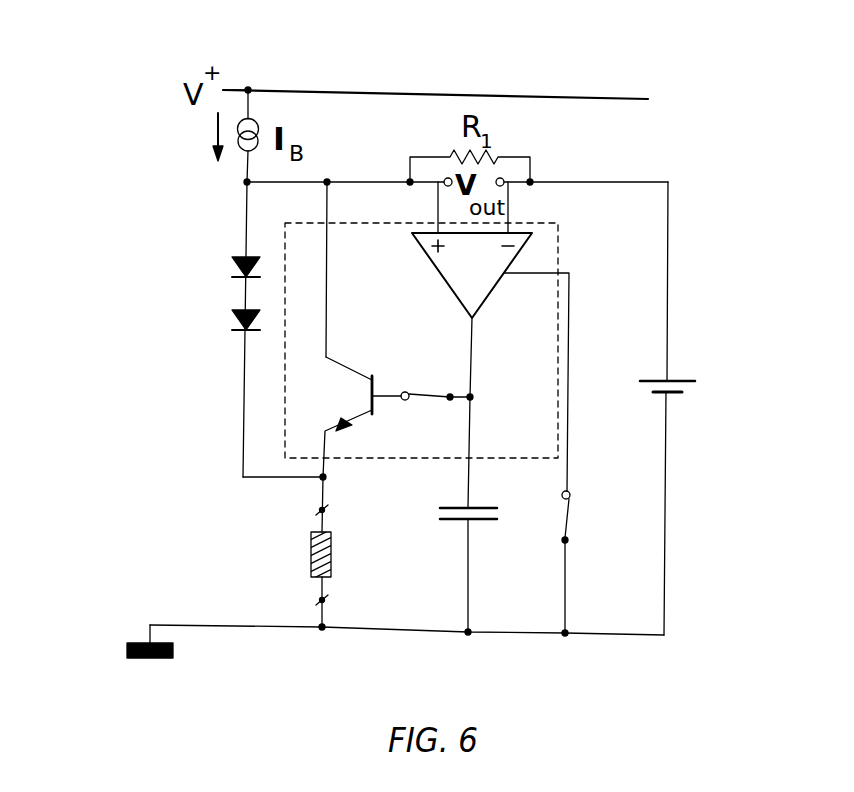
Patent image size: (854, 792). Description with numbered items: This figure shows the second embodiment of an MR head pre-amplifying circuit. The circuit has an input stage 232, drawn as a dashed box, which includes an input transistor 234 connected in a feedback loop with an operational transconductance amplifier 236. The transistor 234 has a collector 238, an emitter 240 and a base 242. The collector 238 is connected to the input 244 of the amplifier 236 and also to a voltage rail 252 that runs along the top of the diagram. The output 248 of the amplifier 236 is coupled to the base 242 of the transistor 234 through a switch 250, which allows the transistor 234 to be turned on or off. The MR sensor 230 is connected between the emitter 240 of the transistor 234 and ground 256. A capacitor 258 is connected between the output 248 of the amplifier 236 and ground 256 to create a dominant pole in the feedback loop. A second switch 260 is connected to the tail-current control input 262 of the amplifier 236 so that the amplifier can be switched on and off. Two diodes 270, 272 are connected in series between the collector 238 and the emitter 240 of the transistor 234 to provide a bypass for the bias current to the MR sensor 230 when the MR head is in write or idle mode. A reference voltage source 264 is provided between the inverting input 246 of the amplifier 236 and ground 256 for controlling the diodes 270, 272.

The MR sensor 230 is at (310, 558).
The input stage 232 is at (360, 458).
The input transistor 234 is at (340, 400).
The operational transconductance amplifier 236 is at (432, 262).
The collector 238 is at (327, 298).
The emitter 240 is at (318, 490).
The base 242 is at (388, 396).
The input 244 is at (437, 207).
The inverting input 246 is at (512, 212).
The output 248 is at (476, 345).
The switch 250 is at (423, 392).
The voltage rail 252 is at (438, 93).
The ground 256 is at (125, 652).
The capacitor 258 is at (492, 525).
The second switch 260 is at (572, 516).
The tail-current control input 262 is at (572, 300).
The reference voltage source 264 is at (672, 394).
The diode 270 is at (230, 268).
The diode 272 is at (230, 322).